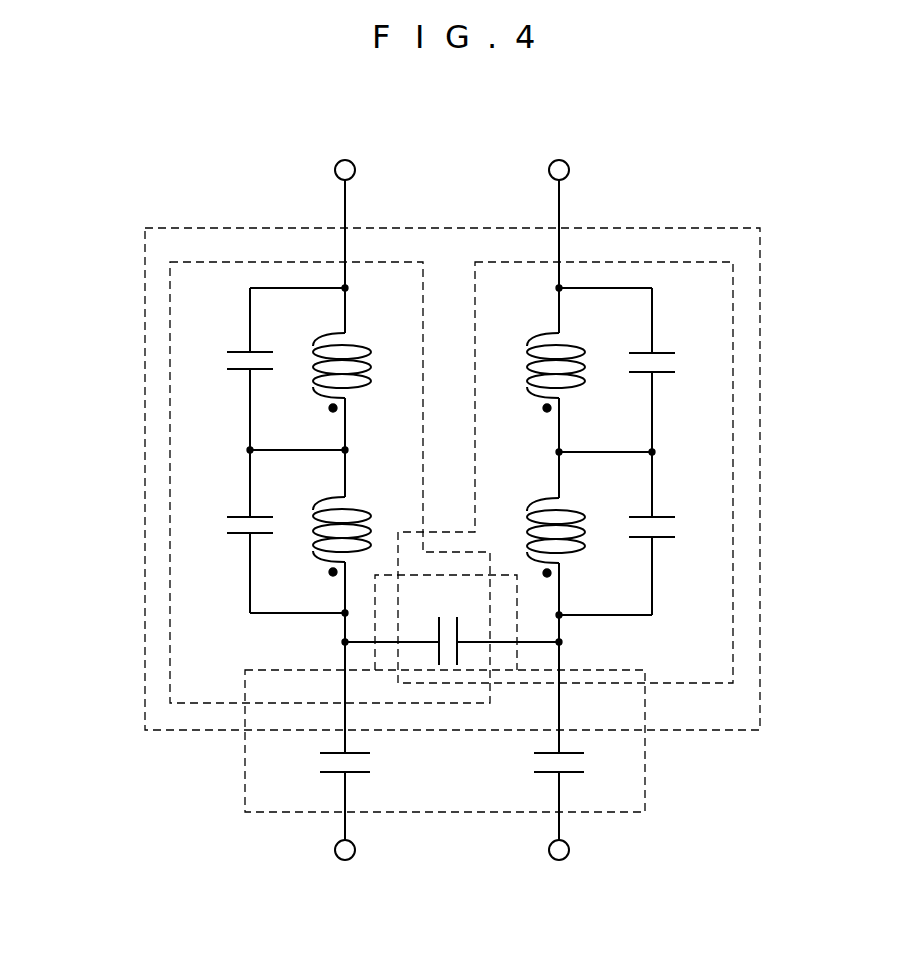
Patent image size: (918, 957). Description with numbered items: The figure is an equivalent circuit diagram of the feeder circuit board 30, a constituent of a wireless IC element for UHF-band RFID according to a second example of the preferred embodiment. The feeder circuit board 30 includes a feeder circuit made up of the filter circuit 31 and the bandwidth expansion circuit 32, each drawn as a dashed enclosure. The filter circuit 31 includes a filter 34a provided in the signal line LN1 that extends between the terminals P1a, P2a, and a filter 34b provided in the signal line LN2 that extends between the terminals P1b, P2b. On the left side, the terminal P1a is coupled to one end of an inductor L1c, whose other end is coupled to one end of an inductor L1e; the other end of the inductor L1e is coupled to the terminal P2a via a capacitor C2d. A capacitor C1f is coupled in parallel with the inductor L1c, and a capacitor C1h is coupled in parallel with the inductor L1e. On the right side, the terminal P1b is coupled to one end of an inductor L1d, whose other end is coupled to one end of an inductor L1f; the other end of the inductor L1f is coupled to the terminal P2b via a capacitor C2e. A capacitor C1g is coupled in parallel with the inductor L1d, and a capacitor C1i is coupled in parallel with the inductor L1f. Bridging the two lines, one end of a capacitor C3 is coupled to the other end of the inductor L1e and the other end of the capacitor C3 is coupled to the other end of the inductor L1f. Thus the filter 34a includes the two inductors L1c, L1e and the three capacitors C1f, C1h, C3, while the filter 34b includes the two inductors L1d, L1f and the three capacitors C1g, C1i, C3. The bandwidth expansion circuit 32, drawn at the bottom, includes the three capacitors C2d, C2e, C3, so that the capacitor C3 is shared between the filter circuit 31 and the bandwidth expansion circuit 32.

The feeder circuit board 30 is at (434, 510).
The filter circuit 31 is at (434, 446).
The bandwidth expansion circuit 32 is at (406, 741).
The filter 34a is at (265, 441).
The filter 34b is at (613, 431).
The terminal P1a is at (347, 143).
The terminal P1b is at (557, 143).
The terminal P2a is at (348, 878).
The terminal P2b is at (557, 878).
The signal line LN1 is at (345, 313).
The signal line LN2 is at (559, 313).
The capacitor C1f is at (215, 335).
The capacitor C1g is at (690, 335).
The capacitor C1h is at (215, 495).
The capacitor C1i is at (692, 500).
The inductor L1c is at (395, 368).
The inductor L1d is at (596, 332).
The inductor L1e is at (381, 497).
The inductor L1f is at (595, 492).
The capacitor C3 is at (452, 622).
The capacitor C2d is at (376, 795).
The capacitor C2e is at (586, 795).